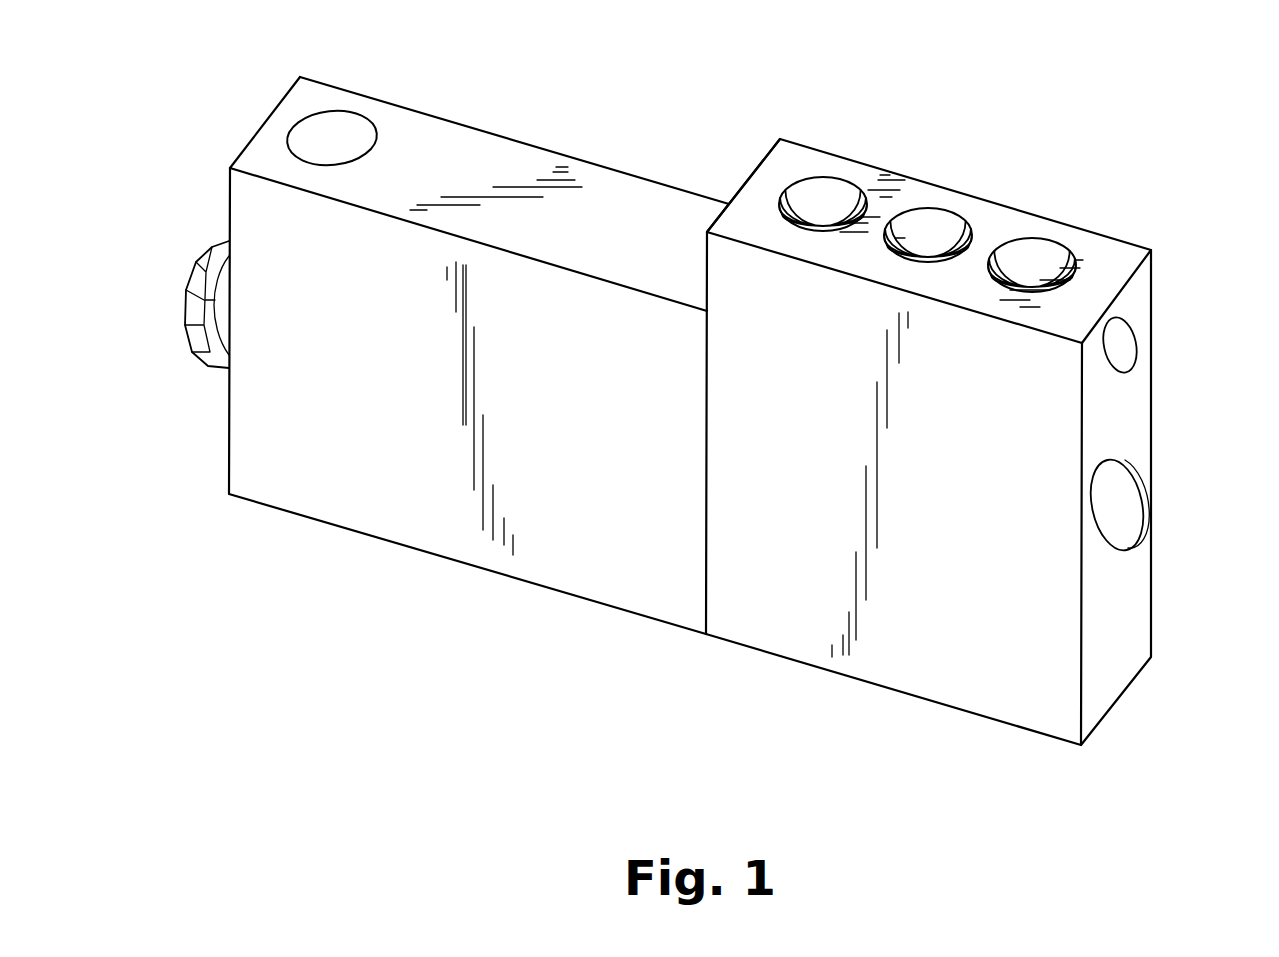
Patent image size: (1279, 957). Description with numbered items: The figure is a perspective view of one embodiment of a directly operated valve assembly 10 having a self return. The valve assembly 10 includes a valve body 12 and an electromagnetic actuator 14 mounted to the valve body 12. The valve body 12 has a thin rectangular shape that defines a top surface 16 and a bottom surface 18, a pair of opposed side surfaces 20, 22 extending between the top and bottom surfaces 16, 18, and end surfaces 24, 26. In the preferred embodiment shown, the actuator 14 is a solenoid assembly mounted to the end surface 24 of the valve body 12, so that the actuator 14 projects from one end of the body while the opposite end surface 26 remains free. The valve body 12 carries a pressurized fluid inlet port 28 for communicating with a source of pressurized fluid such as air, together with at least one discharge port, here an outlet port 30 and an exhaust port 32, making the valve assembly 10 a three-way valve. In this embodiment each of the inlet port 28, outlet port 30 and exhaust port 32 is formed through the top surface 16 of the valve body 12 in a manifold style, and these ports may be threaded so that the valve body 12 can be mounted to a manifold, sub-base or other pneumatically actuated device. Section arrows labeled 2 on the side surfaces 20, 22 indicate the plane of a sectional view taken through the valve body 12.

The directly operated valve assembly 10 is at (721, 401).
The valve body 12 is at (981, 418).
The electromagnetic actuator 14 is at (488, 130).
The top surface 16 is at (1116, 262).
The bottom surface 18 is at (878, 688).
The side surface 20 is at (1153, 333).
The side surface 22 is at (745, 602).
The end surface 24 is at (750, 170).
The end surface 26 is at (1130, 597).
The pressurized fluid inlet port 28 is at (833, 187).
The outlet port 30 is at (935, 215).
The exhaust port 32 is at (1040, 240).
The section line 2- 2 is at (183, 295).